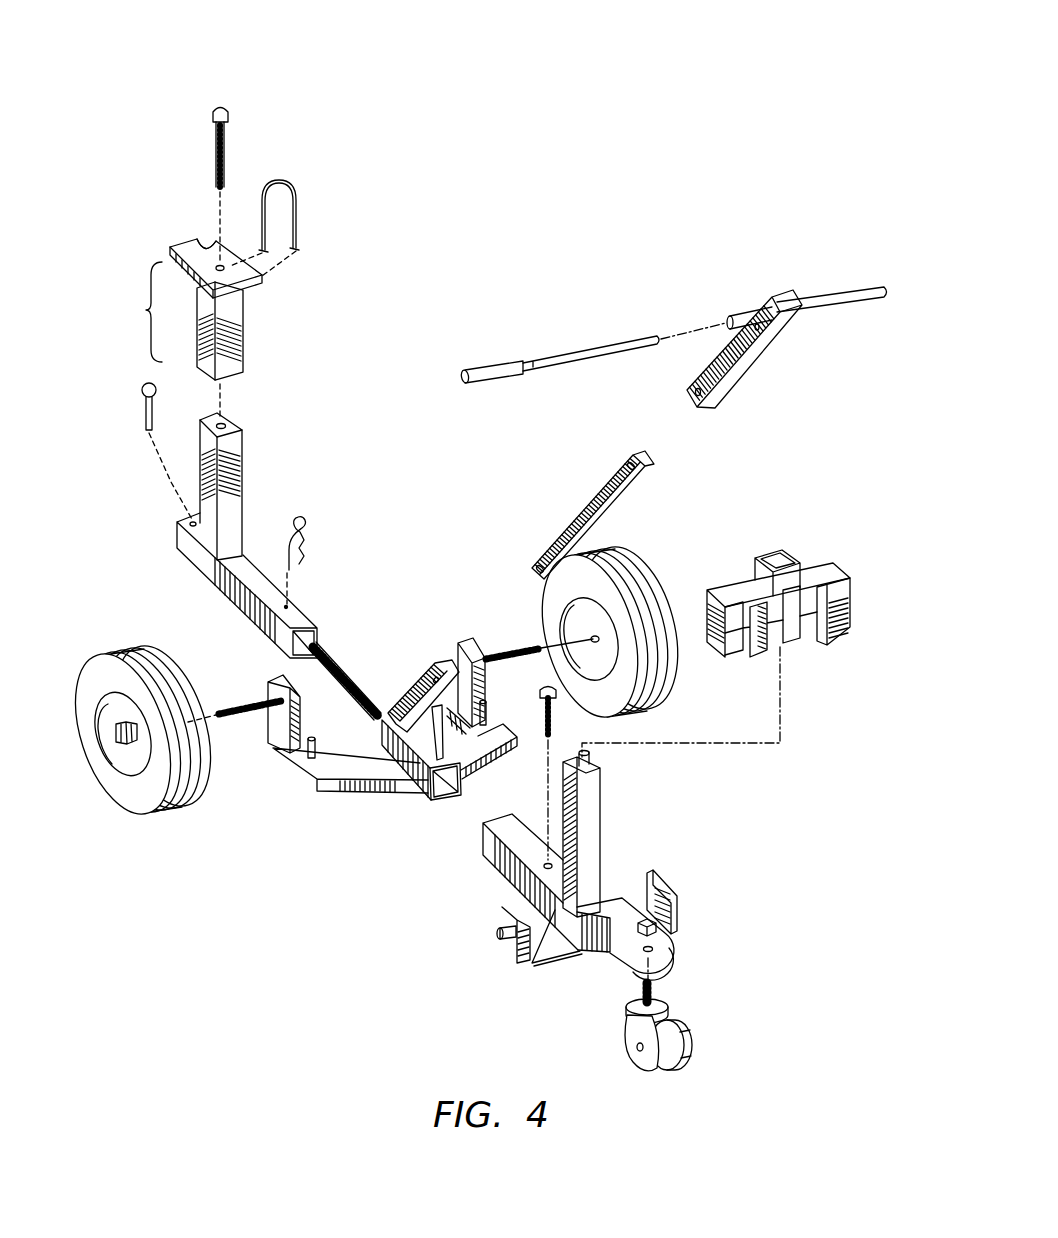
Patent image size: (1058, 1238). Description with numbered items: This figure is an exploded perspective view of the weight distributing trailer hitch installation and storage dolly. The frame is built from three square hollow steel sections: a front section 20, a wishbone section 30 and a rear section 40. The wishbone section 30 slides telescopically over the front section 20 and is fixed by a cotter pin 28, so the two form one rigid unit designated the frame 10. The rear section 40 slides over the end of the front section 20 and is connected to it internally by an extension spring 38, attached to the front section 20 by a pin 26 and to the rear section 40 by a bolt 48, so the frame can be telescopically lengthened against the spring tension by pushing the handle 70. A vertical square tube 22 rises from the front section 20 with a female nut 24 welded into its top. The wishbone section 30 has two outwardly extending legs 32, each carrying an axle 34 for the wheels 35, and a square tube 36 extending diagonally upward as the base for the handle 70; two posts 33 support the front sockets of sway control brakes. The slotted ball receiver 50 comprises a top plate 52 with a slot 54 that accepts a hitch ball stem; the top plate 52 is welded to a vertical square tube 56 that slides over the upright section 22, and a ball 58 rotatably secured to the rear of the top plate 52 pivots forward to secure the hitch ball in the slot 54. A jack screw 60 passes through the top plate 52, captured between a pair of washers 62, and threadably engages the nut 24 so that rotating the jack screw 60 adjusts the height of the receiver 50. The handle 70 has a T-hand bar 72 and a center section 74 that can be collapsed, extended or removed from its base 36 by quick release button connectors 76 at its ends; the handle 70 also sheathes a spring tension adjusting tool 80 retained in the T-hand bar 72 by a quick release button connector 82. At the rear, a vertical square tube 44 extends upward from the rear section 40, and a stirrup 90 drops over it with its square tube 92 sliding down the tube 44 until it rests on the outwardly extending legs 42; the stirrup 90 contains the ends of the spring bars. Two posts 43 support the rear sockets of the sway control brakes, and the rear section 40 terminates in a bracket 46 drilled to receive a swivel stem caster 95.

The frame 10 is at (271, 785).
The front section 20 is at (298, 610).
The vertical square tube 22 is at (200, 473).
The female nut 24 is at (223, 427).
The pin 26 is at (140, 390).
The cotter pin 28 is at (298, 520).
The wishbone section 30 is at (432, 800).
The outwardly extending legs 32 is at (357, 787).
The posts 33 is at (308, 753).
The axle 34 is at (235, 698).
The wheels 35 is at (123, 647).
The square tube 36 is at (417, 687).
The extension spring 38 is at (340, 663).
The rear section 40 is at (557, 910).
The extending legs 42 is at (557, 950).
The posts 43 is at (678, 902).
The vertical square tube 44 is at (600, 838).
The bracket 46 is at (662, 952).
The bolt 48 is at (557, 707).
The slotted ball receiver 50 is at (137, 312).
The top plate 52 is at (227, 253).
The slot 54 is at (197, 240).
The vertical square tube 56 is at (243, 333).
The ball 58 is at (297, 217).
The jack screw 60 is at (227, 147).
The washers 62 is at (231, 116).
The handle 70 is at (752, 372).
The T-hand bar 72 is at (838, 290).
The center section 74 is at (618, 510).
The quick release button connectors 76 is at (632, 466).
The spring tension adjusting tool 80 is at (500, 358).
The quick release button connector 82 is at (533, 360).
The stirrup 90 is at (850, 590).
The square tube 92 is at (790, 553).
The swivel stem caster 95 is at (627, 1043).